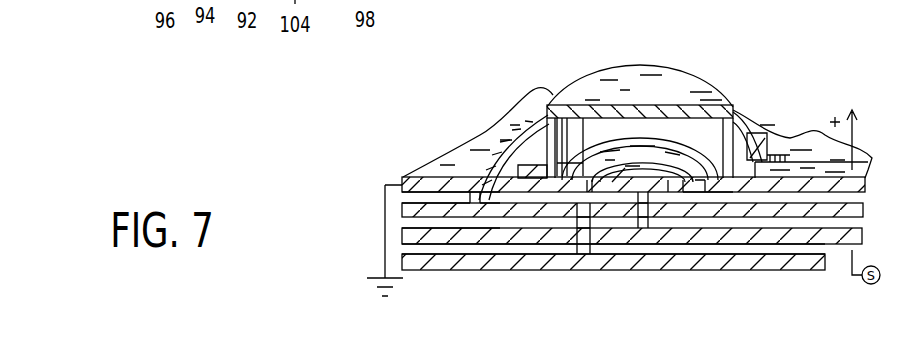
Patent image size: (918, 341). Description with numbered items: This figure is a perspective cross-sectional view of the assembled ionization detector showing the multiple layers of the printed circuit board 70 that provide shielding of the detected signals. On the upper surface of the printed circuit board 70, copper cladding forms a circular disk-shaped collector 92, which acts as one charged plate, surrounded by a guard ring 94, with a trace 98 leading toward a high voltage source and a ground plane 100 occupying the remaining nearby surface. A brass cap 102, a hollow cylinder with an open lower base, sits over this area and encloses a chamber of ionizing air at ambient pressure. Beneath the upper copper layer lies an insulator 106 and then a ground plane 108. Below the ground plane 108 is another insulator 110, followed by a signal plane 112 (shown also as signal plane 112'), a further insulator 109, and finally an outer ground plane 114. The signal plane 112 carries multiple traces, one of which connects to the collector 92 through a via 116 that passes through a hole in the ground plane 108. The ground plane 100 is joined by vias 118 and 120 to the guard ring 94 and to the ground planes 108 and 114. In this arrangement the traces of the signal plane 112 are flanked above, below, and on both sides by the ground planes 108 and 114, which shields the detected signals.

The printed circuit board 70 is at (462, 99).
The ground plane 100 is at (533, 102).
The brass cap 102 is at (637, 83).
The trace 98 is at (800, 170).
The insulator 106 is at (400, 177).
The ground plane 108 is at (407, 193).
The insulator 110 is at (408, 223).
The signal plane 112' is at (406, 235).
The signal plane 112 is at (632, 272).
The insulator 109 is at (413, 250).
The outer ground plane 114 is at (440, 262).
The via 118 is at (482, 200).
The via 120 is at (567, 240).
The collector 92 is at (620, 190).
The via 116 is at (633, 190).
The guard ring 94 is at (712, 182).